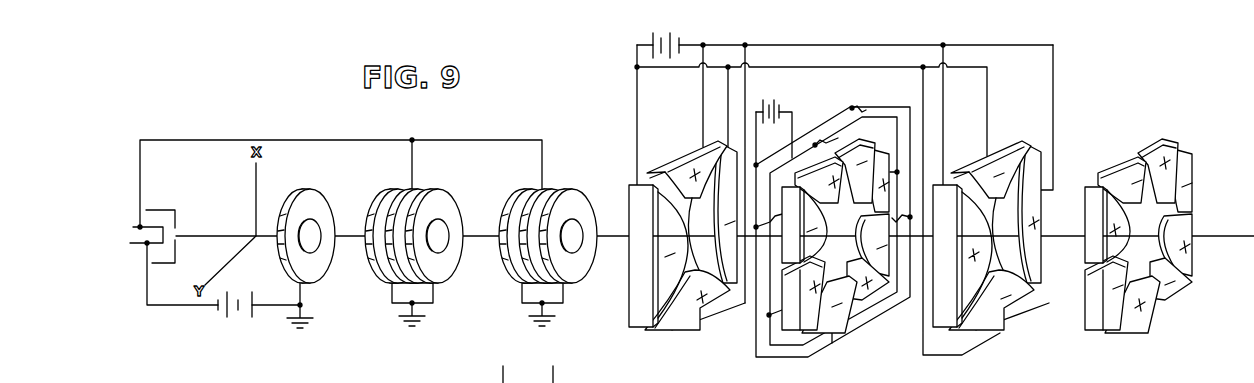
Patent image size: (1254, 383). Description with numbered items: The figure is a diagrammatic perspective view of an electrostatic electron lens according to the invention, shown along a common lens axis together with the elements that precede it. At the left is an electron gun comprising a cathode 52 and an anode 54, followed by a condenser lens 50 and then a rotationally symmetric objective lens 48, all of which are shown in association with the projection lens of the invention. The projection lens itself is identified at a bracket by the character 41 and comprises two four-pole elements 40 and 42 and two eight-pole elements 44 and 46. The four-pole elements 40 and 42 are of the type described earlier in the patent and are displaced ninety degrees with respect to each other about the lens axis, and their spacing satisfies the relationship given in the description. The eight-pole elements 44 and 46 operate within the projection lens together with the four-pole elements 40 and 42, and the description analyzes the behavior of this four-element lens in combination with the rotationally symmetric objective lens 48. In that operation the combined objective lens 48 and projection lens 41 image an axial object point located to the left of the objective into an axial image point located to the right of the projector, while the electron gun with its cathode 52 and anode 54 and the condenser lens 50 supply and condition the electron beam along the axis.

The four-pole element 40 is at (687, 143).
The projection lens 41 is at (910, 178).
The four-pole element 42 is at (1028, 114).
The eight-pole element 44 is at (830, 140).
The eight-pole element 46 is at (1150, 224).
The rotationally symmetric objective lens 48 is at (573, 200).
The condenser lens 50 is at (437, 207).
The cathode 52 is at (162, 224).
The anode 54 is at (305, 207).